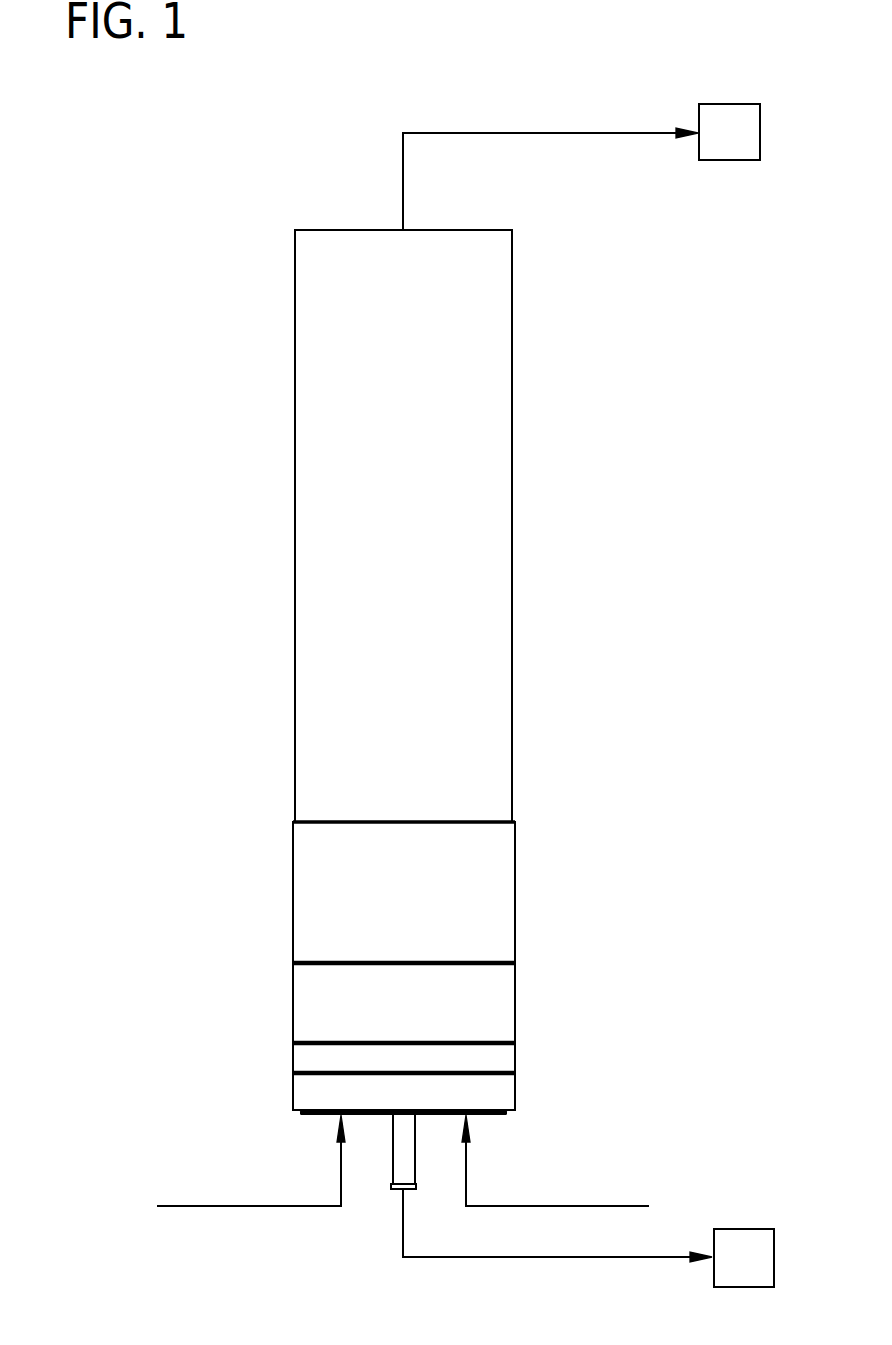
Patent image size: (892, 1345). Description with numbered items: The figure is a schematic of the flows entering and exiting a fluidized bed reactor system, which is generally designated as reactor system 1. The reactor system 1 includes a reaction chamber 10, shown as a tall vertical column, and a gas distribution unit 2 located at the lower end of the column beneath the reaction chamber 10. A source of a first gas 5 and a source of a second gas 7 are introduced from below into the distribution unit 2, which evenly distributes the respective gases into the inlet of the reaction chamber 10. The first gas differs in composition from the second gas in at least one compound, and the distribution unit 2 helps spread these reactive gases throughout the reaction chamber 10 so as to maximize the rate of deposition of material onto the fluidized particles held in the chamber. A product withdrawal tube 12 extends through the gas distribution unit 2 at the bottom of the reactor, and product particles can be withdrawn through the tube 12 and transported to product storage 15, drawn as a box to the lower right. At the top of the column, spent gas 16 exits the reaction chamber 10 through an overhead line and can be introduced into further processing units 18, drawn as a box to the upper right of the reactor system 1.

The fluidized bed reactor system 1 is at (173, 180).
The gas distribution unit 2 is at (515, 890).
The reaction chamber 10 is at (512, 525).
The spent gas 16 is at (551, 132).
The further processing units 18 is at (729, 132).
The source of first gas 5 is at (213, 1206).
The source of second gas 7 is at (556, 1206).
The product withdrawal tube 12 is at (399, 1175).
The product storage 15 is at (744, 1258).